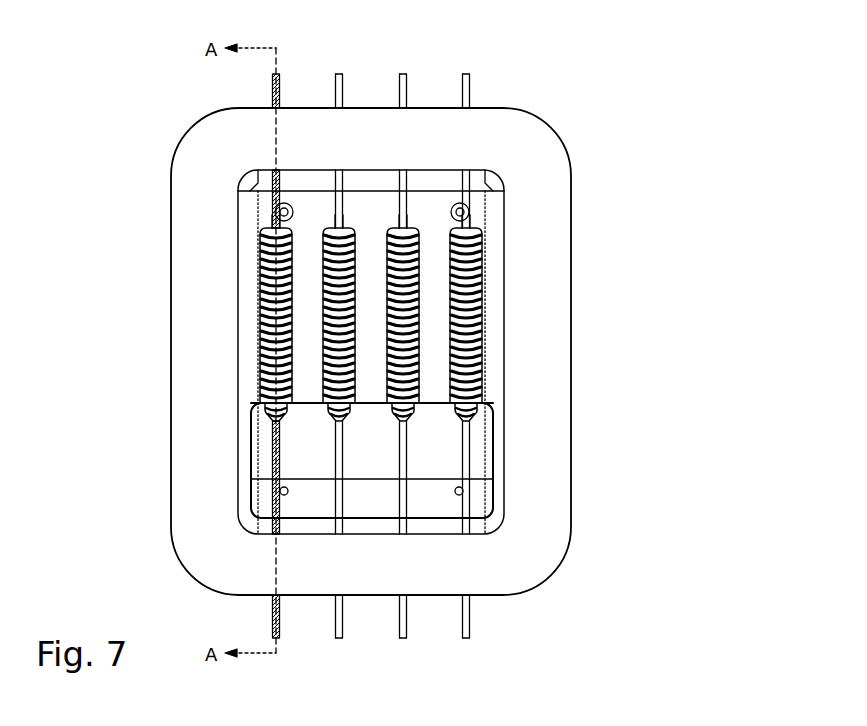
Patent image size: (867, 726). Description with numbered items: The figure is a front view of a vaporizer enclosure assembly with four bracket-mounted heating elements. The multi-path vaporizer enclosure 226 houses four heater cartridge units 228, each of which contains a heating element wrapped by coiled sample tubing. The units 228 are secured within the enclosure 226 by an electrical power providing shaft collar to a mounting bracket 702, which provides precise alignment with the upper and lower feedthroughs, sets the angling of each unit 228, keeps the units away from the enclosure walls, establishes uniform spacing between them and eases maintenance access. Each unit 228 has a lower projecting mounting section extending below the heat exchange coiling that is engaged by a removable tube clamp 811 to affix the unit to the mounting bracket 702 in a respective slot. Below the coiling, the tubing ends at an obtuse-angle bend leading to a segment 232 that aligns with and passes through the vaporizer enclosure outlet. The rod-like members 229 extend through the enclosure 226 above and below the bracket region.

The rods 229 is at (468, 88).
The multi-path vaporizer enclosure 226 is at (570, 172).
The heater cartridge unit 228 is at (480, 260).
The removable tube clamp 811 is at (478, 393).
The segment 232 is at (470, 458).
The mounting bracket 702 is at (423, 467).